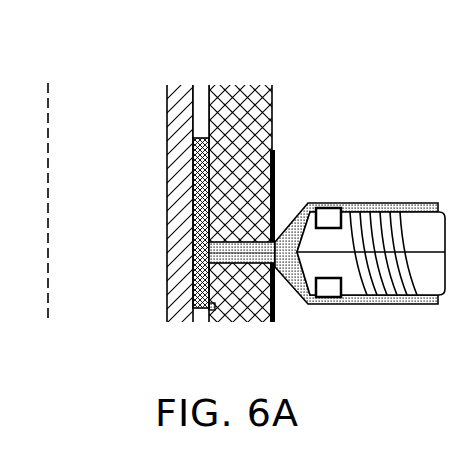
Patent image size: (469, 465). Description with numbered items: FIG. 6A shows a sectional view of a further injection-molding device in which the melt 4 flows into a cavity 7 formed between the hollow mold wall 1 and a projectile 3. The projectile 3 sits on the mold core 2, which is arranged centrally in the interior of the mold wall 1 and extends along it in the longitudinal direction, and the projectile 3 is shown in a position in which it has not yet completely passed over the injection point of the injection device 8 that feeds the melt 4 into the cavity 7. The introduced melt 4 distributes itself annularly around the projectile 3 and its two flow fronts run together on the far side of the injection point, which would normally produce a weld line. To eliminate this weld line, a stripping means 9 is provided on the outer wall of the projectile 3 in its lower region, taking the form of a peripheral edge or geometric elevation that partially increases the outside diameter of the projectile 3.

The mold wall 1 is at (264, 118).
The mold core 2 is at (101, 282).
The projectile 3 is at (168, 103).
The melt 4 is at (198, 186).
The cavity 7 is at (203, 100).
The injection device 8 is at (383, 225).
The stripping means 9 is at (202, 312).